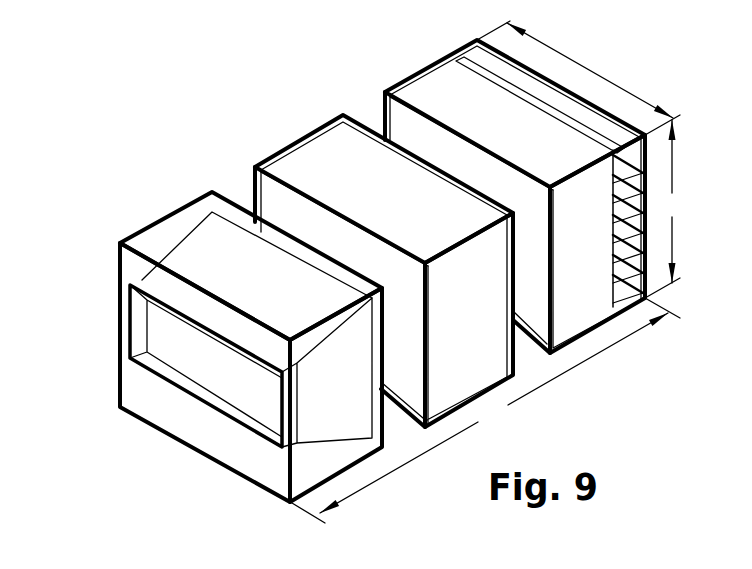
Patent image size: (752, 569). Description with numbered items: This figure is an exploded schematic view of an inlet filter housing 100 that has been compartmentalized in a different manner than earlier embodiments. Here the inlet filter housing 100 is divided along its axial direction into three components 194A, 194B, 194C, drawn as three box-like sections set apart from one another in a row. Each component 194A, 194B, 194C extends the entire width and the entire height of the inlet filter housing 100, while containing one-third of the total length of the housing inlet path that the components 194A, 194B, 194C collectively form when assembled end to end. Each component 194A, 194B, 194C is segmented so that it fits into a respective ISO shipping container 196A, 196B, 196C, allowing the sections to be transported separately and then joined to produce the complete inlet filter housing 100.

The inlet filter housing 100 is at (126, 103).
The component 194A is at (388, 88).
The ISO shipping container 196A is at (427, 100).
The component 194B is at (307, 177).
The ISO shipping container 196B is at (283, 148).
The component 194C is at (192, 257).
The ISO shipping container 196C is at (162, 220).